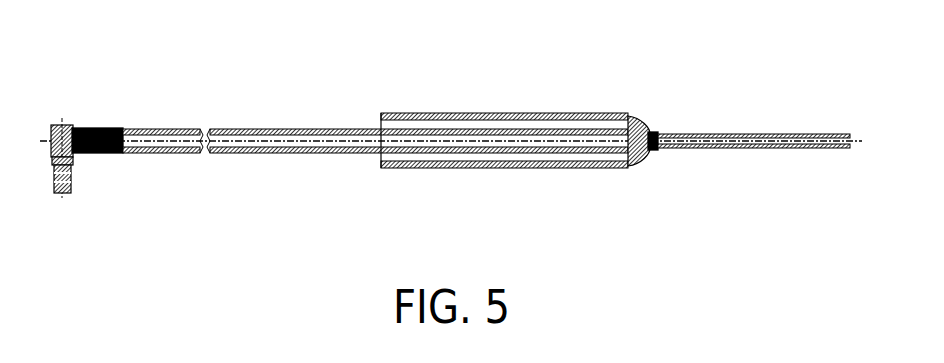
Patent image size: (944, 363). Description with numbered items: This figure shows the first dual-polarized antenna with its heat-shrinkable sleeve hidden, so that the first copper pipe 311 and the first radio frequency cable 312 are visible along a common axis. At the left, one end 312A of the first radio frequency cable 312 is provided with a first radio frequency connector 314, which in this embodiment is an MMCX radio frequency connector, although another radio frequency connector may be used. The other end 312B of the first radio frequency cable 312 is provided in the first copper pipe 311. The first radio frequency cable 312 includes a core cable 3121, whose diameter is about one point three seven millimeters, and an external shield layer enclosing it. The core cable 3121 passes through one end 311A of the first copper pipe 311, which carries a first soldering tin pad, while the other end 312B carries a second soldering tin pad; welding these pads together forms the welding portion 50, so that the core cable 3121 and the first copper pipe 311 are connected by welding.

The first radio frequency connector 314 is at (58, 125).
The one end of the first radio frequency cable 312A is at (101, 127).
The first radio frequency cable 312 is at (274, 155).
The first copper pipe 311 is at (480, 170).
The other end of the first radio frequency cable 312B is at (630, 167).
The welding portion 50 is at (655, 152).
The core cable 3121 is at (788, 150).
The one end of the first copper pipe 311A is at (650, 126).